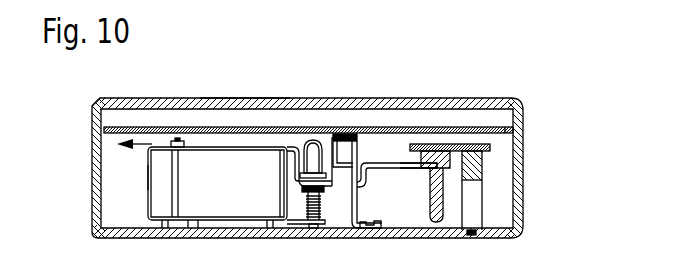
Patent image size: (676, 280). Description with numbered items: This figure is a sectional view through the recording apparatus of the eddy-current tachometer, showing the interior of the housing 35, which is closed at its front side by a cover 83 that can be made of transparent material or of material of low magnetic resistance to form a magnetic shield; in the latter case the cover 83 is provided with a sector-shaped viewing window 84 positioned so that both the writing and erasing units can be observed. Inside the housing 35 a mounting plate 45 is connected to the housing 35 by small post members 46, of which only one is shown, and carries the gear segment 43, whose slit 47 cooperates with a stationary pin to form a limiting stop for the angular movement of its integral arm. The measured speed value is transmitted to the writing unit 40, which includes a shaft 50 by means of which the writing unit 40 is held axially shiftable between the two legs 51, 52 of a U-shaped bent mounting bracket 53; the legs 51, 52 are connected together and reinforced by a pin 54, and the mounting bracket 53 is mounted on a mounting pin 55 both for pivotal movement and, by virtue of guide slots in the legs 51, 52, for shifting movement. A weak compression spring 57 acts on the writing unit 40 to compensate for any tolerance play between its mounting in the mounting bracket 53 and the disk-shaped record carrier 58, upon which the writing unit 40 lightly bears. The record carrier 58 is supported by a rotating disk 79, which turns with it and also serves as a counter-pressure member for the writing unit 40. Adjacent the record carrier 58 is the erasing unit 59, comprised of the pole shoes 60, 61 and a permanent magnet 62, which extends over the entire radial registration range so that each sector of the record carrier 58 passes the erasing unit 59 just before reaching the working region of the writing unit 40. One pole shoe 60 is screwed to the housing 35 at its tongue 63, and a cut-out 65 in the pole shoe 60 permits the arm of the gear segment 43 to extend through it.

The housing 35 is at (491, 240).
The writing unit 40 is at (305, 137).
The gear segment 43 is at (397, 184).
The mounting plate 45 is at (421, 143).
The post member 46 is at (472, 192).
The slit 47 is at (378, 170).
The shaft 50 is at (320, 221).
The leg 51 is at (195, 228).
The leg 52 is at (205, 157).
The mounting bracket 53 is at (148, 177).
The pin 54 is at (283, 219).
The mounting pin 55 is at (177, 201).
The compression spring 57 is at (320, 200).
The record carrier 58 is at (503, 141).
The erasing unit 59 is at (353, 86).
The pole shoe 60 is at (365, 127).
The pole shoe 61 is at (336, 134).
The permanent magnet 62 is at (354, 160).
The tongue 63 is at (381, 228).
The cut-out 65 is at (358, 207).
The rotating disk 79 is at (470, 143).
The cover 83 is at (94, 99).
The viewing window 84 is at (240, 99).